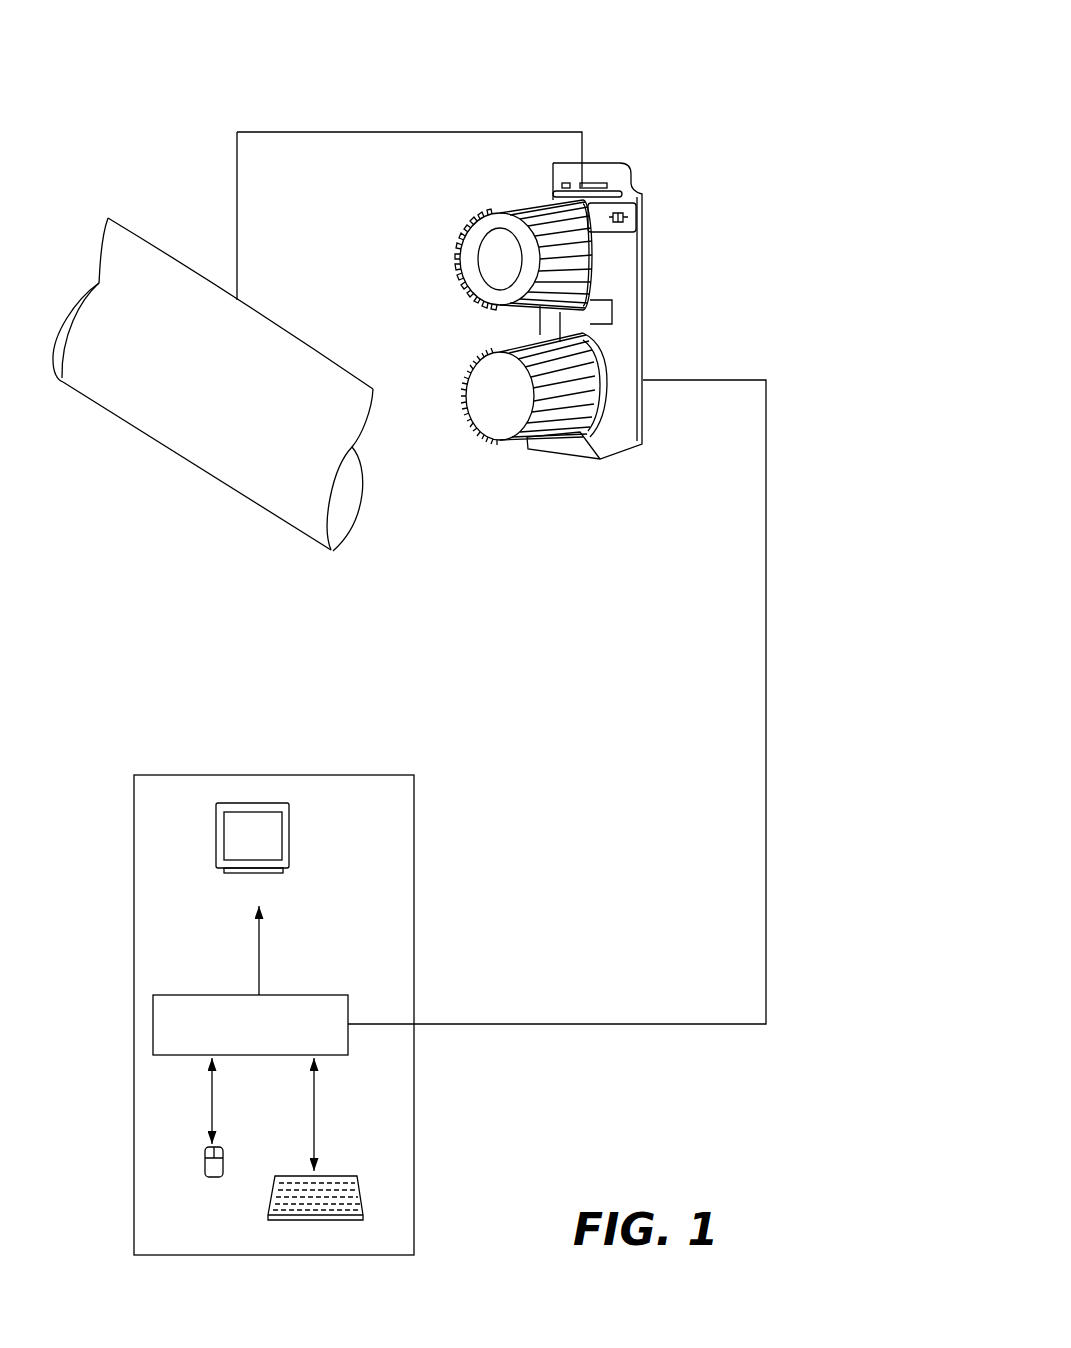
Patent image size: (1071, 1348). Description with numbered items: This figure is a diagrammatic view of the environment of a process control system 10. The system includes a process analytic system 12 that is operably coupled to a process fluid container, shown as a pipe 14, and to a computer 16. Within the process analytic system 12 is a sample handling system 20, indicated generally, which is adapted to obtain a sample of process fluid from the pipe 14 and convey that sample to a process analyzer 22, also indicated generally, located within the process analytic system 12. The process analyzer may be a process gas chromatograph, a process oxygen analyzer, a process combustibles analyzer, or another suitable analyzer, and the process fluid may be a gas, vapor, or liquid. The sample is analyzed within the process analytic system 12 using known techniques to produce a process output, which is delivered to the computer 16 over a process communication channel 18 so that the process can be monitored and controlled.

The process control system 10 is at (725, 99).
The process analytic system 12 is at (649, 282).
The pipe 14 is at (195, 433).
The computer 16 is at (417, 837).
The process communication channel 18 is at (771, 740).
The sample handling system 20 is at (649, 228).
The process analyzer 22 is at (598, 306).